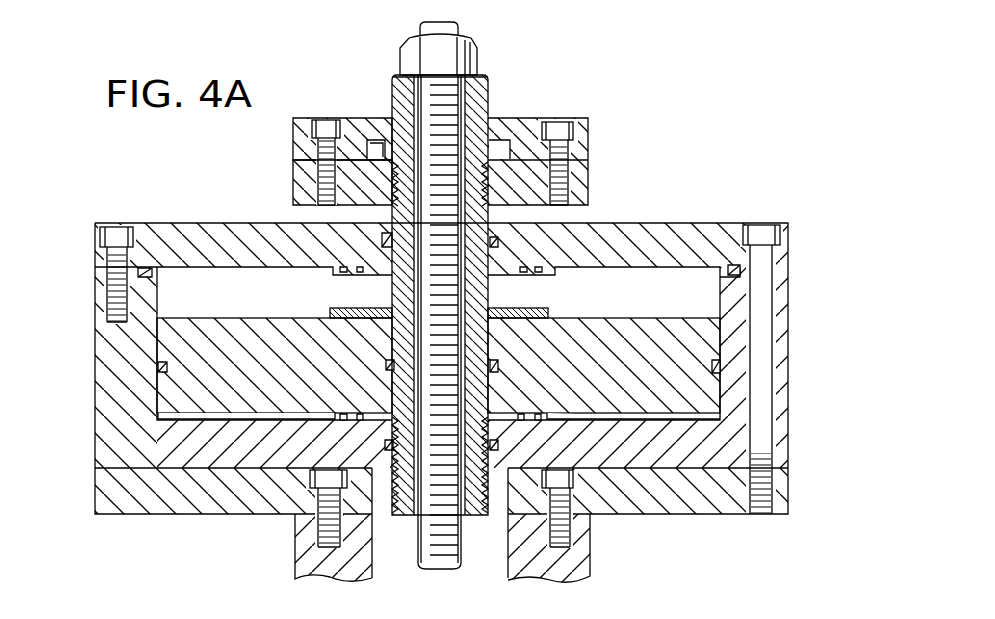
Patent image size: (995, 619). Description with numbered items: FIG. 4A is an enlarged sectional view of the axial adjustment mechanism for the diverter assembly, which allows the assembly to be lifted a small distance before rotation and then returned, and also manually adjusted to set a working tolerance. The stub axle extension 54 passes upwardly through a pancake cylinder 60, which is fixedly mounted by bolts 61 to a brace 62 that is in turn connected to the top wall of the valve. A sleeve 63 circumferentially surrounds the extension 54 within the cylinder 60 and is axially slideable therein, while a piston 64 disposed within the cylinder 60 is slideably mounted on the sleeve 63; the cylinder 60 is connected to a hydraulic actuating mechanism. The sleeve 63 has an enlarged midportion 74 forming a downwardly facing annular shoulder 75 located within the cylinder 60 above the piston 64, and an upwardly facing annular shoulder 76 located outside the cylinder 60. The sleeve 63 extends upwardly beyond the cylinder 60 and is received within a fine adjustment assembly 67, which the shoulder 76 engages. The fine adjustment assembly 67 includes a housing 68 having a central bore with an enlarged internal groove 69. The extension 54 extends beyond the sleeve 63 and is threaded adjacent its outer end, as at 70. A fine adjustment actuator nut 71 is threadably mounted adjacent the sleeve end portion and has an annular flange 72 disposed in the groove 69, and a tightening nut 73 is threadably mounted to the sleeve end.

The stub axle extension 54 is at (453, 82).
The pancake cylinder 60 is at (786, 223).
The bolts 61 is at (320, 498).
The brace 62 is at (589, 564).
The sleeve 63 is at (478, 350).
The piston 64 is at (218, 322).
The fine adjustment assembly 67 is at (296, 118).
The housing 68 is at (293, 164).
The internal groove 69 is at (382, 141).
The threads 70 is at (463, 108).
The fine adjustment actuator nut 71 is at (392, 74).
The annular flange 72 is at (505, 146).
The tightening nut 73 is at (470, 51).
The enlarged midportion 74 is at (503, 310).
The downwardly facing annular shoulder 75 is at (392, 328).
The upwardly facing annular shoulder 76 is at (392, 187).